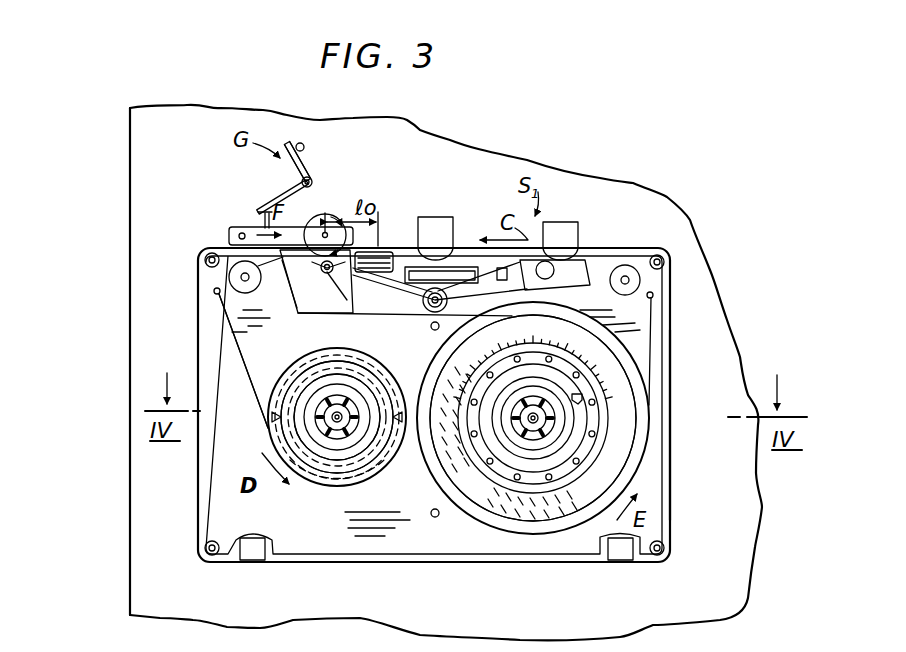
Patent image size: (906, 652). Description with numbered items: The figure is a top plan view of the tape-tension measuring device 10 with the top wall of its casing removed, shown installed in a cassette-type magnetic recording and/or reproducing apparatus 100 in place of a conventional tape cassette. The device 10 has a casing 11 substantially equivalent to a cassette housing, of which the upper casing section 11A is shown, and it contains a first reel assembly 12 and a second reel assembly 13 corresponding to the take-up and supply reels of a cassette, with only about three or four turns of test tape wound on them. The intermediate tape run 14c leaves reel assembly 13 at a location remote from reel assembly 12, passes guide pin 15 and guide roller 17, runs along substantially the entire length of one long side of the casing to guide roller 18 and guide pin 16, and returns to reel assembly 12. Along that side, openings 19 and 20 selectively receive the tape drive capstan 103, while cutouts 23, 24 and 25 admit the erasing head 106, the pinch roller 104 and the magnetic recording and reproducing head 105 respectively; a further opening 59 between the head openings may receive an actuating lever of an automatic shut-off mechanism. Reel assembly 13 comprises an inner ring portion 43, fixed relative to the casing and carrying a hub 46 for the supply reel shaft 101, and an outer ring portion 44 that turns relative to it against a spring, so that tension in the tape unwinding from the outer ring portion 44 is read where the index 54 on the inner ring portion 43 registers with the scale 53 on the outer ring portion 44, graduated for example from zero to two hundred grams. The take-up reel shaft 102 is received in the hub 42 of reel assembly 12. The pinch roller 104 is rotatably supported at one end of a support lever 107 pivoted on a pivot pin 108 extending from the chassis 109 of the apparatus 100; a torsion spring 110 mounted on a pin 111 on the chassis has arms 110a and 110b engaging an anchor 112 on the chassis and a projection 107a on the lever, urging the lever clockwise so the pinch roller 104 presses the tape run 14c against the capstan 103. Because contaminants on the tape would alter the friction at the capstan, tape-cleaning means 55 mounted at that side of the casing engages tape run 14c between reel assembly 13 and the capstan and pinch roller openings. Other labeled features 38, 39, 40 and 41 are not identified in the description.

The tape-tension measuring device 10 is at (690, 303).
The casing 11 is at (680, 387).
The upper casing section 11A is at (671, 508).
The first reel assembly 12 is at (332, 498).
The second reel assembly 13 is at (514, 541).
The intermediate tape run 14c is at (237, 345).
The guide pin 15 is at (654, 295).
The guide pin 16 is at (214, 291).
The guide roller 17 is at (622, 285).
The guide roller 18 is at (232, 292).
The opening 19 is at (574, 284).
The opening 20 is at (316, 284).
The cutout 23 is at (587, 273).
The cutout 24 is at (254, 342).
The cutout 25 is at (438, 223).
The fastening screws 38 is at (203, 557).
The reel flange 39 is at (305, 380).
The reel ring 40 is at (372, 356).
The reel rim 41 is at (358, 481).
The hub 42 is at (347, 397).
The inner ring portion 43 is at (640, 352).
The outer ring portion 44 is at (560, 530).
The hub 46 is at (527, 433).
The scale 53 is at (640, 352).
The index 54 is at (565, 412).
The tape-cleaning means 55 is at (388, 246).
The opening 59 is at (480, 248).
The magnetic recording and/or reproducing apparatus 100 is at (697, 219).
The supply reel shaft 101 is at (530, 426).
The take-up reel shaft 102 is at (336, 421).
The tape drive capstan 103 is at (333, 274).
The pinch roller 104 is at (266, 322).
The magnetic recording and reproducing head 105 is at (453, 222).
The erasing head 106 is at (563, 232).
The support lever 107 is at (291, 219).
The projection 107a is at (262, 203).
The pivot pin 108 is at (238, 229).
The chassis 109 is at (130, 222).
The torsion spring 110 is at (318, 170).
The spring arm 110a is at (312, 165).
The spring arm 110b is at (262, 200).
The pin 111 is at (302, 183).
The anchor 112 is at (302, 145).